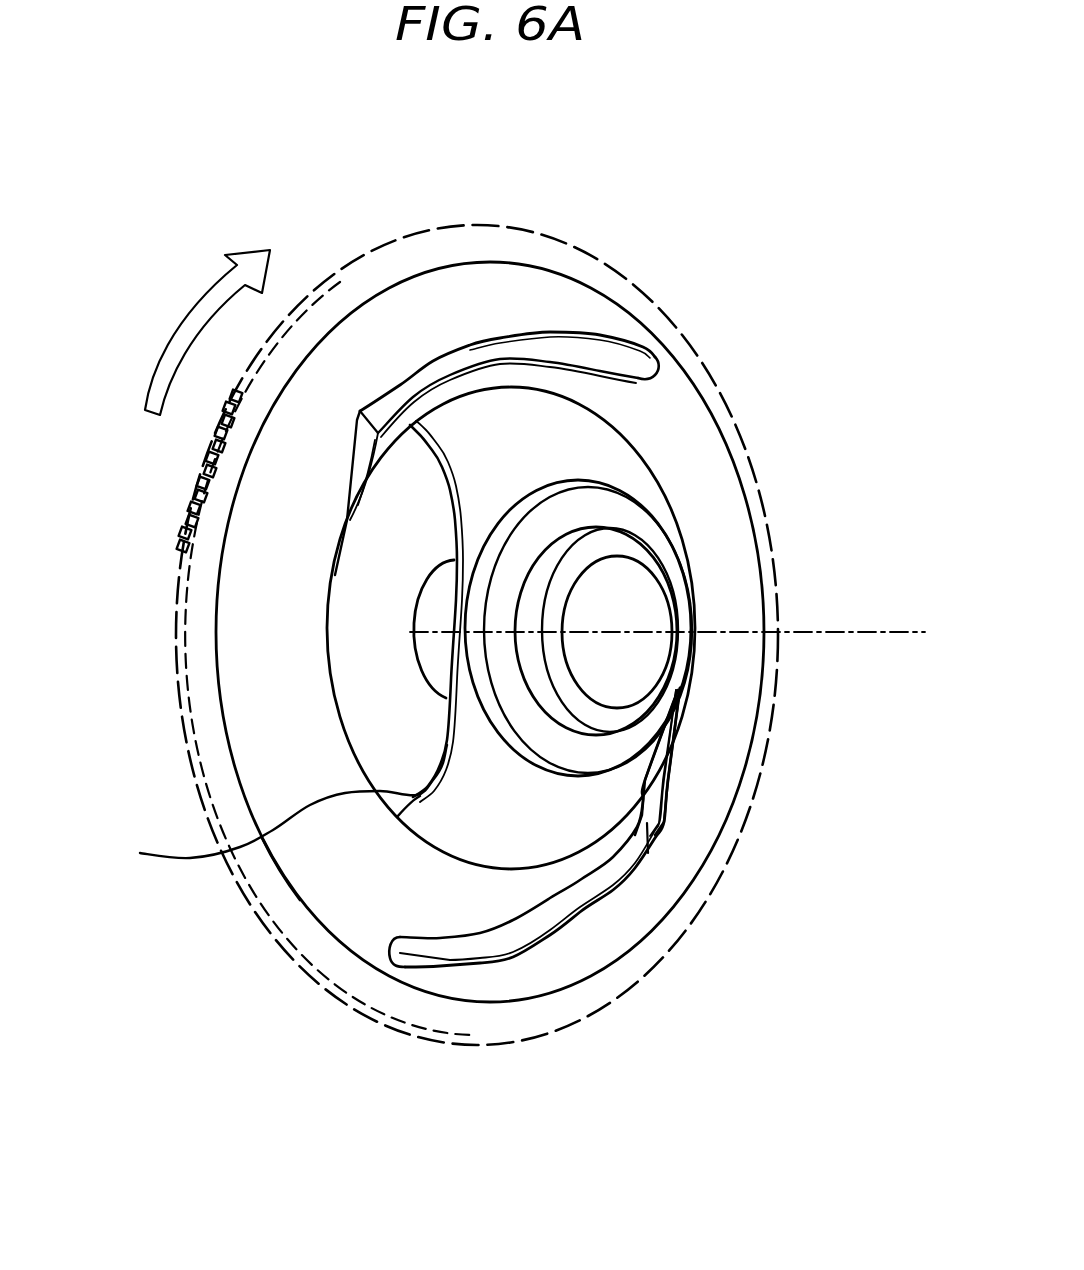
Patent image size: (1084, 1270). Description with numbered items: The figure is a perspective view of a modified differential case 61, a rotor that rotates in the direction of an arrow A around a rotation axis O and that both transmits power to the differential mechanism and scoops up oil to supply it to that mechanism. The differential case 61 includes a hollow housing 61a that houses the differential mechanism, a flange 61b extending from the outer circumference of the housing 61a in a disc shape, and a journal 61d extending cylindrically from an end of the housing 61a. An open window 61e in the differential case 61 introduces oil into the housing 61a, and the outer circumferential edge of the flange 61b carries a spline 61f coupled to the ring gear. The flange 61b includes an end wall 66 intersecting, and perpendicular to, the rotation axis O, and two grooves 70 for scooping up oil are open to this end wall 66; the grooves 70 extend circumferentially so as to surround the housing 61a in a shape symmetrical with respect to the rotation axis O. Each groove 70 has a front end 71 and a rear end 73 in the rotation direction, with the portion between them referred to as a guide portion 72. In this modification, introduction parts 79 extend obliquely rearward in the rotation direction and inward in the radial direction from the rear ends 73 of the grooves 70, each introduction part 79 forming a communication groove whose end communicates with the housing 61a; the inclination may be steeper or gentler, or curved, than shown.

The differential case 61 is at (722, 386).
The end wall 66 is at (250, 660).
The housing 61a is at (630, 772).
The flange 61b is at (291, 838).
The journal 61d is at (672, 690).
The open window 61e is at (274, 716).
The spline 61f is at (185, 520).
The groove 70 is at (553, 174).
The front end 71 is at (638, 360).
The guide portion 72 is at (510, 352).
The rear end 73 is at (382, 420).
The introduction part 79 is at (362, 452).
The rotation axis O is at (873, 632).
The arrow A is at (185, 318).